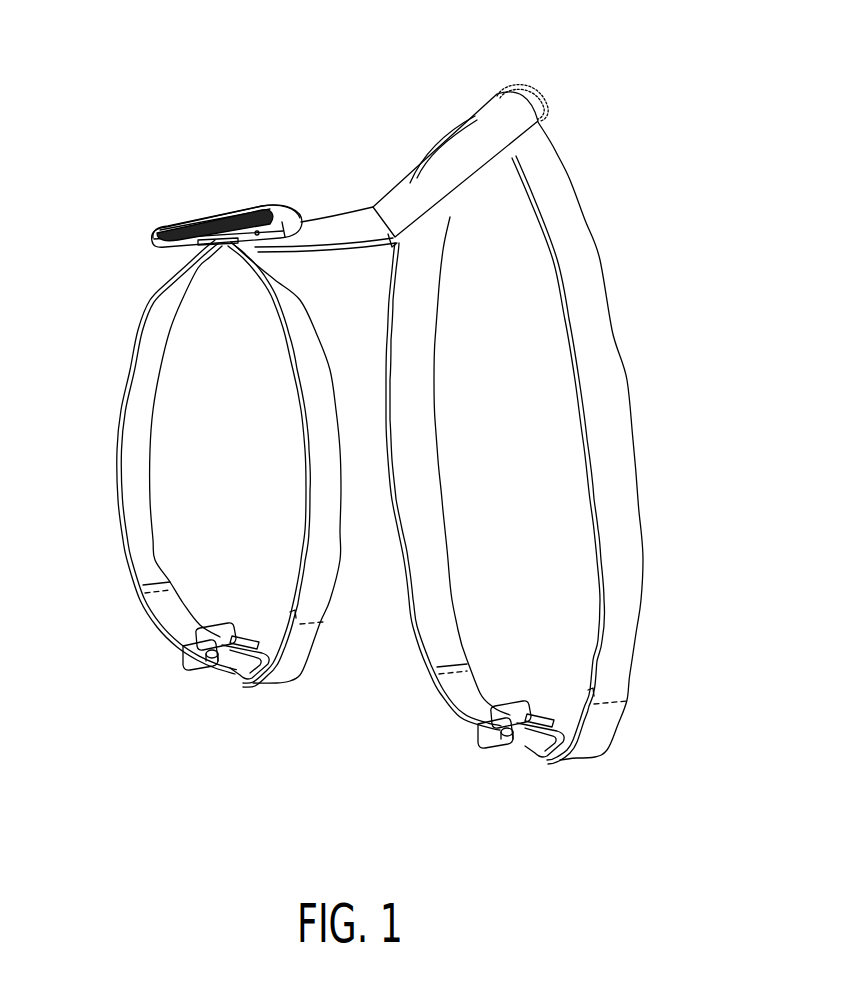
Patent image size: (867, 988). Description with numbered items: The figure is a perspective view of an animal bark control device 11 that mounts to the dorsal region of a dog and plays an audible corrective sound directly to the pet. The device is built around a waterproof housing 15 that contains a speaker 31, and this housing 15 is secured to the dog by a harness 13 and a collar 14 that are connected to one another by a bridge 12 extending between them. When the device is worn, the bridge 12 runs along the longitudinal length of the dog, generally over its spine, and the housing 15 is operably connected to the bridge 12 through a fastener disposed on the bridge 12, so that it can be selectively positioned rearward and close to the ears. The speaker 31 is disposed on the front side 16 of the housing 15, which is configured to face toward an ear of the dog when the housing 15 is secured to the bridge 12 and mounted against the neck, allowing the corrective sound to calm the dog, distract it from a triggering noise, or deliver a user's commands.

The animal bark control device 11 is at (786, 96).
The bridge 12 is at (408, 203).
The harness 13 is at (442, 709).
The collar 14 is at (127, 570).
The housing 15 is at (254, 208).
The front side 16 is at (160, 241).
The speaker 31 is at (201, 221).